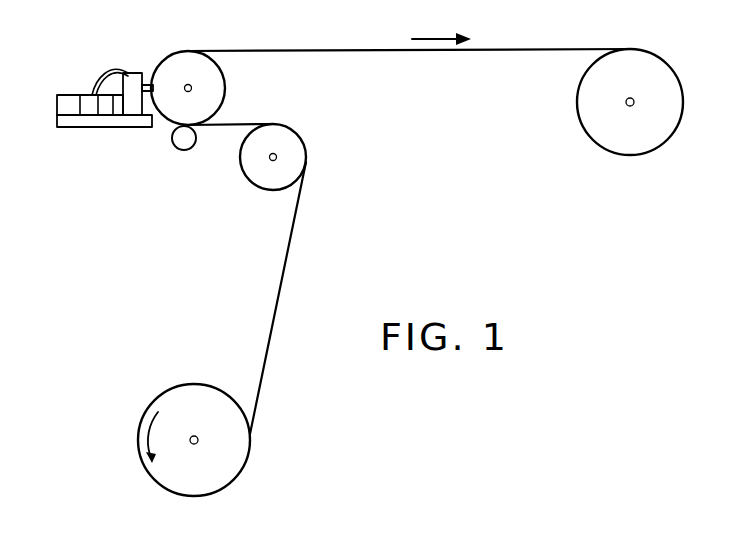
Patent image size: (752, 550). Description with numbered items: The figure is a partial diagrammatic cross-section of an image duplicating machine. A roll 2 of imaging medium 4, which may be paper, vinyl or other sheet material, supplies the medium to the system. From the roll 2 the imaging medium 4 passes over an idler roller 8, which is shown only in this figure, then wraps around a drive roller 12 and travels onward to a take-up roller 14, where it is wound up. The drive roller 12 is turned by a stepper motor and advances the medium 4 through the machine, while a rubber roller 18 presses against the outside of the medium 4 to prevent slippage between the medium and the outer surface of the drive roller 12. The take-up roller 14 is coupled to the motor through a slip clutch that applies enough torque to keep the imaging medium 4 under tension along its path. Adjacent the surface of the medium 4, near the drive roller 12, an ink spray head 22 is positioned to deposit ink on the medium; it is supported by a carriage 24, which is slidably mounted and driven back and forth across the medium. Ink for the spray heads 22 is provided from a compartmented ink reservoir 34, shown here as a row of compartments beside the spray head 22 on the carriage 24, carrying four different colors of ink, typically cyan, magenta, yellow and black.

The roll 2 is at (148, 410).
The imaging medium 4 is at (280, 296).
The idler roller 8 is at (251, 184).
The drive roller 12 is at (225, 84).
The take-up roller 14 is at (683, 100).
The rubber rollers 18 is at (182, 150).
The ink spray heads 22 is at (141, 64).
The carriage 24 is at (57, 120).
The compartmented ink reservoir 34 is at (70, 95).